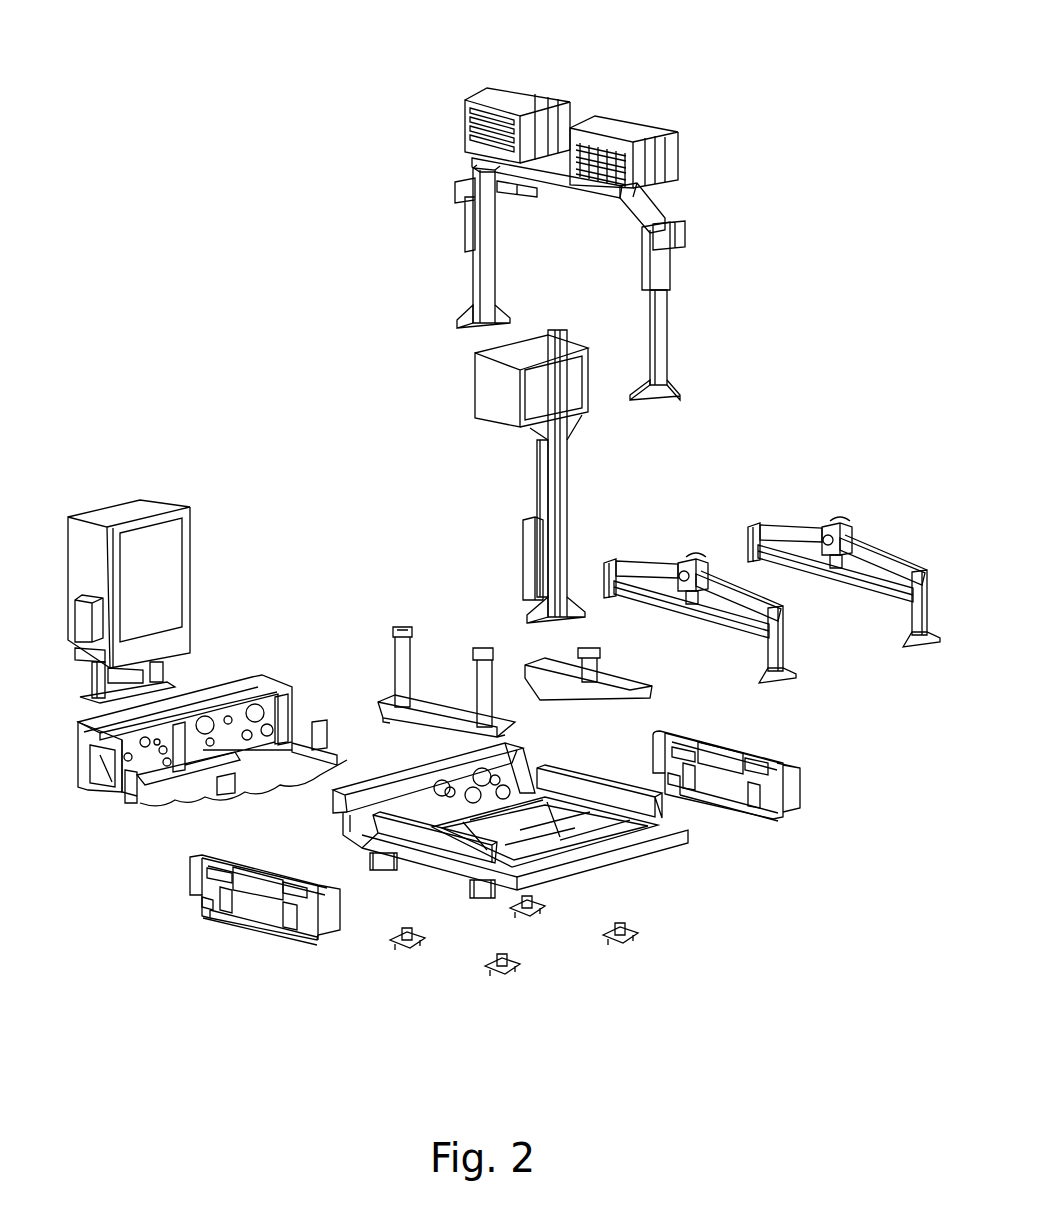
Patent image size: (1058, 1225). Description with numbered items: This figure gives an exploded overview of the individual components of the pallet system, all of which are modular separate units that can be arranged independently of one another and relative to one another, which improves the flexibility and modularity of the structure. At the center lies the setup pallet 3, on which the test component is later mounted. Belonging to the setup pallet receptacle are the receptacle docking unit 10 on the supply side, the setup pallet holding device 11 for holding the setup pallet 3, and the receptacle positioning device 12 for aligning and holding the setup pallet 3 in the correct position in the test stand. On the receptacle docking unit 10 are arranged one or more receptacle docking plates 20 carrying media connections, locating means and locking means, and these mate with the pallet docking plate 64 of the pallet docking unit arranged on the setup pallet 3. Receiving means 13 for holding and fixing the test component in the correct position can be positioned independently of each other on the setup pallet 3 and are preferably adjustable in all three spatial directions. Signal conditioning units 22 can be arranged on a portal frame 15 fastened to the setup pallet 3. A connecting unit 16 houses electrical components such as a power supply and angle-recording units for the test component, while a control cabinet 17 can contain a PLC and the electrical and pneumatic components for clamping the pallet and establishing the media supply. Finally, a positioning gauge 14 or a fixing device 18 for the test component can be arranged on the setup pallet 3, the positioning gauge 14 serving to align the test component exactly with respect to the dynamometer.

The setup pallet 3 is at (667, 847).
The receptacle docking unit 10 is at (108, 757).
The setup pallet holding device 11 is at (728, 765).
The receptacle positioning device 12 is at (480, 968).
The receiving means 13 is at (402, 660).
The positioning gauge 14 is at (647, 567).
The portal frame 15 is at (660, 200).
The connecting unit 16 is at (560, 482).
The control cabinet 17 is at (113, 517).
The fixing device 18 is at (878, 550).
The receptacle docking plate 20 is at (223, 713).
The signal conditioning unit 22 is at (512, 108).
The pallet docking plate 64 is at (377, 807).